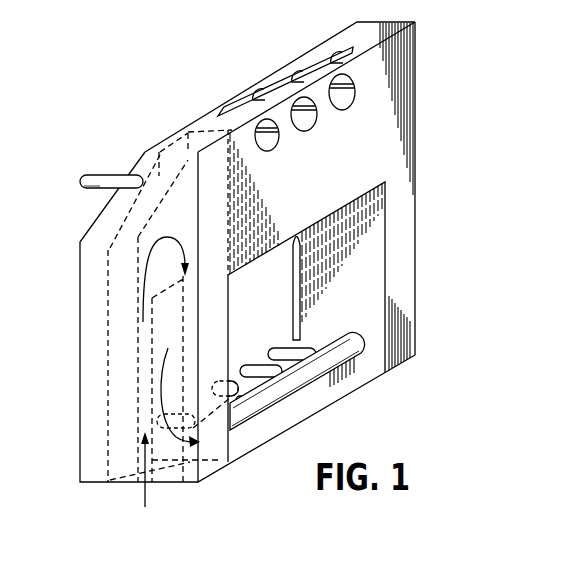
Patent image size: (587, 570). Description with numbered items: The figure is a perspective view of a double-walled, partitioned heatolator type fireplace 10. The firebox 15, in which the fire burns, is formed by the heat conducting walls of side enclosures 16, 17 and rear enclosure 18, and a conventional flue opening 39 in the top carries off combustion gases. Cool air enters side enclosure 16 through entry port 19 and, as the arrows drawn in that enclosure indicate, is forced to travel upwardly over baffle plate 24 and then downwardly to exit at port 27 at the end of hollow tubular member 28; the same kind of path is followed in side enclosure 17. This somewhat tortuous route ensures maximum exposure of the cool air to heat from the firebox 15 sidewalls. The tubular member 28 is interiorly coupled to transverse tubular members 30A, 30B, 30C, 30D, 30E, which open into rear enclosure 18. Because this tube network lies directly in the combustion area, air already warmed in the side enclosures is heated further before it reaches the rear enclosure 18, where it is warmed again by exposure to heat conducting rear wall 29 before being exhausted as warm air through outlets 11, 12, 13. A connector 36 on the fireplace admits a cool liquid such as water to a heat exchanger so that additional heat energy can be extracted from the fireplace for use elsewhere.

The fireplace 10 is at (475, 127).
The outlet 11 is at (268, 143).
The outlet 12 is at (306, 121).
The outlet 13 is at (343, 100).
The firebox 15 is at (366, 284).
The side enclosure 16 is at (185, 473).
The side enclosure 17 is at (407, 338).
The rear enclosure 18 is at (97, 448).
The entry port 19 is at (127, 483).
The baffle plate 24 is at (163, 480).
The port 27 is at (372, 346).
The hollow tubular member 28 is at (283, 398).
The heat conducting rear wall 29 is at (278, 270).
The transverse tubular member 30A is at (213, 414).
The transverse tubular member 30B is at (247, 410).
The transverse tubular member 30C is at (235, 385).
The transverse tubular member 30D is at (260, 372).
The transverse tubular member 30E is at (303, 353).
The connector 36 is at (104, 178).
The flue opening 39 is at (239, 108).